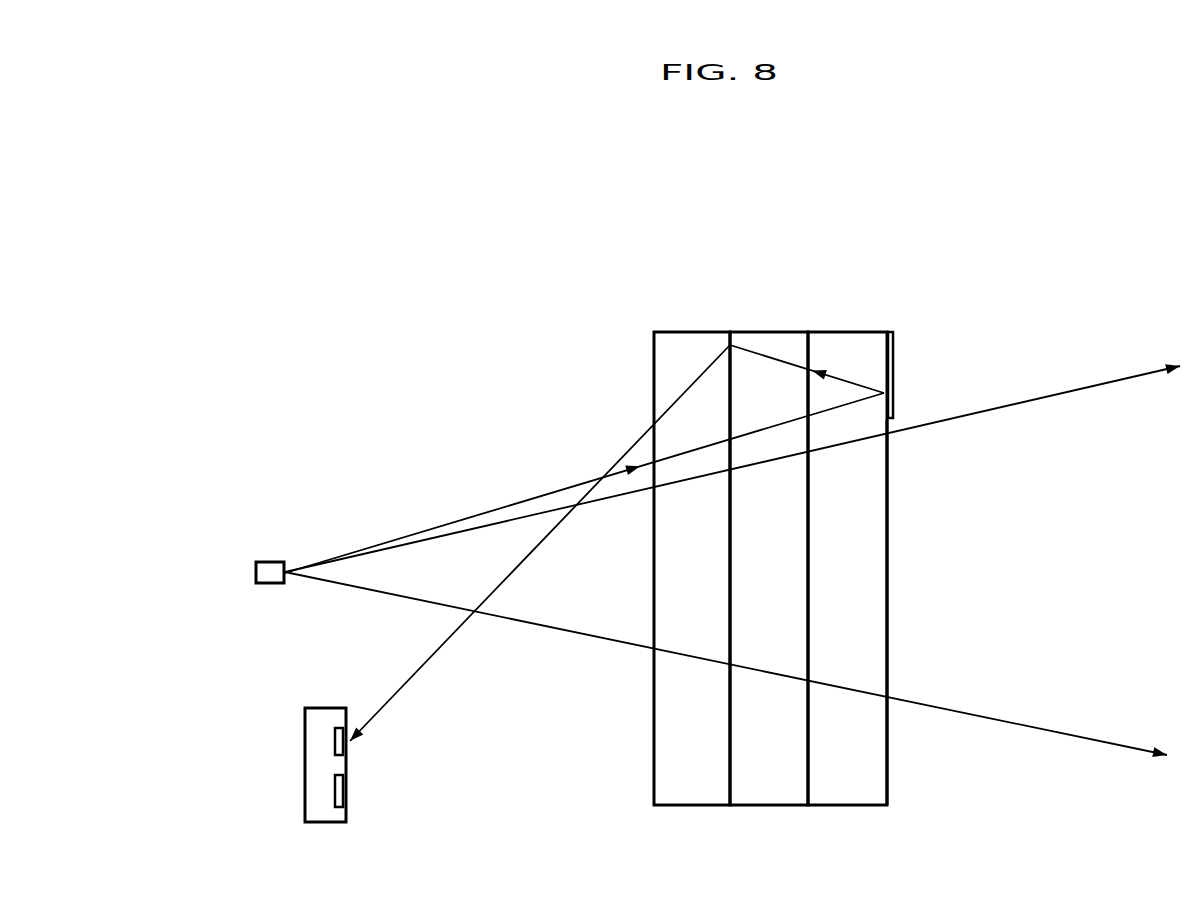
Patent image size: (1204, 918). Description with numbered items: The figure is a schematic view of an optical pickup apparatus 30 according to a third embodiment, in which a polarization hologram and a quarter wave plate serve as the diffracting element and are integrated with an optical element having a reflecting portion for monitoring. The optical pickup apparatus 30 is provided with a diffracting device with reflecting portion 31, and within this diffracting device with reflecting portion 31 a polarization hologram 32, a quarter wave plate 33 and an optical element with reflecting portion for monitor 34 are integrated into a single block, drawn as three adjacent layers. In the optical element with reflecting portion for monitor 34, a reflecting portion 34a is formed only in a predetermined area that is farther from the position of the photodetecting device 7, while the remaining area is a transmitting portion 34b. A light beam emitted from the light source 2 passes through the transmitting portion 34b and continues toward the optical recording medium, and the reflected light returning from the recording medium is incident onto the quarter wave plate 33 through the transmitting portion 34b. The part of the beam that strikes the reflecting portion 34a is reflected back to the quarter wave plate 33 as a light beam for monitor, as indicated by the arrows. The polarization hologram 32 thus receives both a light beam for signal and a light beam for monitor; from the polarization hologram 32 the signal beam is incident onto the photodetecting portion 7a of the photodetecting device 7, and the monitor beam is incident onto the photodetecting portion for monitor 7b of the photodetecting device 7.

The optical pickup apparatus 30 is at (1083, 186).
The diffracting device with reflecting portion 31 is at (822, 246).
The polarization hologram 32 is at (694, 332).
The quarter wave plate 33 is at (773, 332).
The optical element with reflecting portion for monitor 34 is at (859, 332).
The reflecting portion 34a is at (893, 387).
The transmitting portion 34b is at (888, 583).
The light source 2 is at (255, 572).
The photodetecting device 7 is at (305, 763).
The photodetecting portion 7a is at (340, 792).
The photodetecting portion for monitor 7b is at (337, 733).